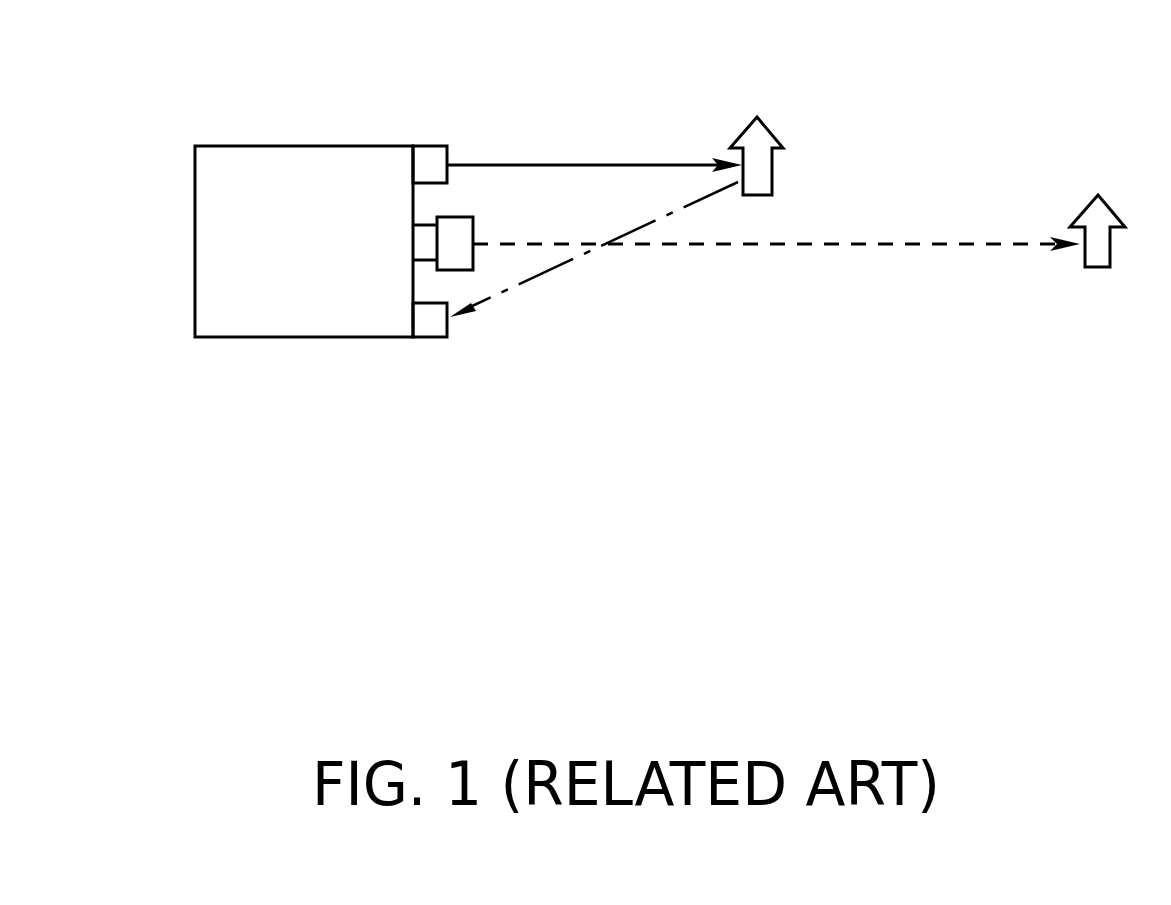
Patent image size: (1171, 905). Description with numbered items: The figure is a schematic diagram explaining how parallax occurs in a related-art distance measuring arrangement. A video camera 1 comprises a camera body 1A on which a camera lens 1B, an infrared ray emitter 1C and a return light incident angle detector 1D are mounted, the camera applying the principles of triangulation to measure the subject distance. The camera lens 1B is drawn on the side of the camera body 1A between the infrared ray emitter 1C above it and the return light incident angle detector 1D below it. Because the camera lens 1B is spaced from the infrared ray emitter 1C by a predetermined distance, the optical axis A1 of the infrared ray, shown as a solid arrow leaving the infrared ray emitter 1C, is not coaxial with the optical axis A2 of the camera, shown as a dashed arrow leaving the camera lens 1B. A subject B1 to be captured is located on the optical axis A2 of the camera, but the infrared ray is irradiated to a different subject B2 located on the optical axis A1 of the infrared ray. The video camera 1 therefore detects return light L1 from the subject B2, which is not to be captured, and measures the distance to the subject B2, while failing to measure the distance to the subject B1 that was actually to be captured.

The video camera 1 is at (367, 218).
The camera body 1A is at (223, 146).
The camera lens 1B is at (473, 224).
The infrared ray emitter 1C is at (430, 145).
The return light incident angle detector 1D is at (427, 338).
The optical axis of infrared ray A1 is at (555, 163).
The optical axis of camera A2 is at (917, 247).
The subject to be captured B1 is at (1107, 201).
The subject not to be captured B2 is at (768, 121).
The return light L1 is at (516, 288).